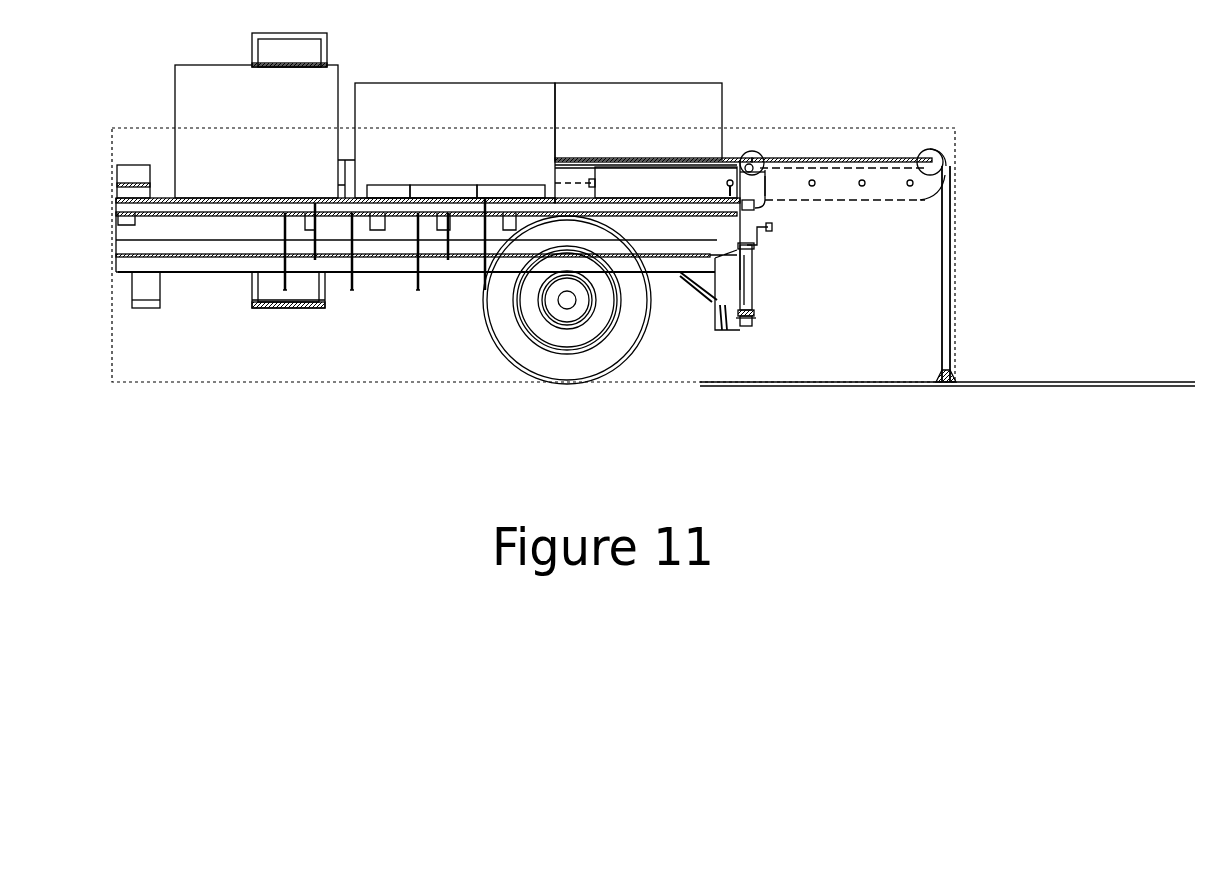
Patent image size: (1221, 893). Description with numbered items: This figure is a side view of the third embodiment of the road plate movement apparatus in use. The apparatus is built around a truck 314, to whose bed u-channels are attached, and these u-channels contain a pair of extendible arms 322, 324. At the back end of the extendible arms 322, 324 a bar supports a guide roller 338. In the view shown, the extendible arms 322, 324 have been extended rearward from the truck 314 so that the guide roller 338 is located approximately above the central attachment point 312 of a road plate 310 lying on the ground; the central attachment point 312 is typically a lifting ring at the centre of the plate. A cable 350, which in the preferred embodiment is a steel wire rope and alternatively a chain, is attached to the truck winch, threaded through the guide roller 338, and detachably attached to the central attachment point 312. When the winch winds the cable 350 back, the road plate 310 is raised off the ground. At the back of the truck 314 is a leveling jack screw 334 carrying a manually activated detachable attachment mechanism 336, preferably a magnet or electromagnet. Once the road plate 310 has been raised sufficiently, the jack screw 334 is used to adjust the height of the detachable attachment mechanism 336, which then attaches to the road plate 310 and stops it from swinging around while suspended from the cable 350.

The road plate 310 is at (1100, 380).
The central attachment point 312 is at (950, 385).
The truck 314 is at (243, 272).
The extendible arm 322 is at (872, 200).
The extendible arm 324 is at (790, 200).
The leveling jack screw 334 is at (754, 285).
The detachable attachment mechanism 336 is at (754, 318).
The guide roller 338 is at (943, 152).
The cable 350 is at (949, 250).